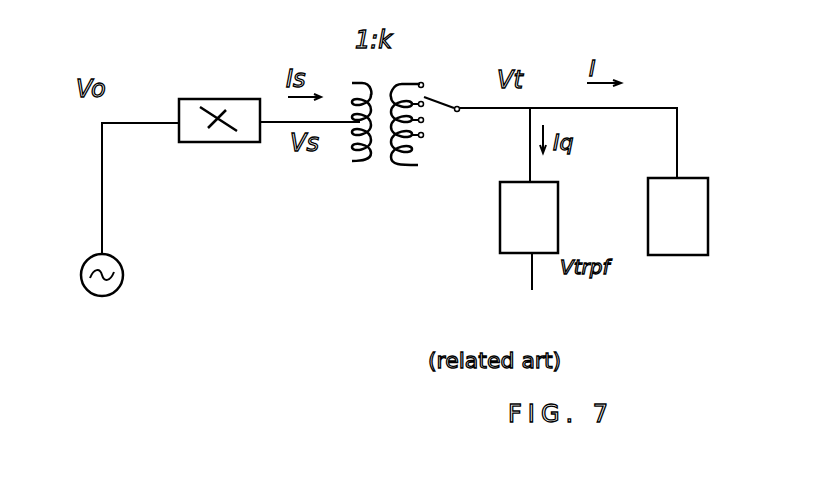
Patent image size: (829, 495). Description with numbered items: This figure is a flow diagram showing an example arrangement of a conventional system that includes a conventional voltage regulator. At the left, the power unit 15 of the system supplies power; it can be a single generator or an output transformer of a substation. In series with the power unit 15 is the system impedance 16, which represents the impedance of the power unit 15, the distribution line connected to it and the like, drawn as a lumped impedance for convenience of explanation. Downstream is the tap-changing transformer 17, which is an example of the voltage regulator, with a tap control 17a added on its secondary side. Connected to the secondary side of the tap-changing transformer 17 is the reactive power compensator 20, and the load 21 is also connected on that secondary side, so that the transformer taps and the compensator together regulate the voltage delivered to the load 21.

The power unit 15 is at (123, 272).
The system impedance 16 is at (212, 99).
The tap-changing transformer 17 is at (365, 165).
The tap control 17a is at (453, 93).
The reactive power compensator 20 is at (500, 232).
The load 21 is at (708, 215).